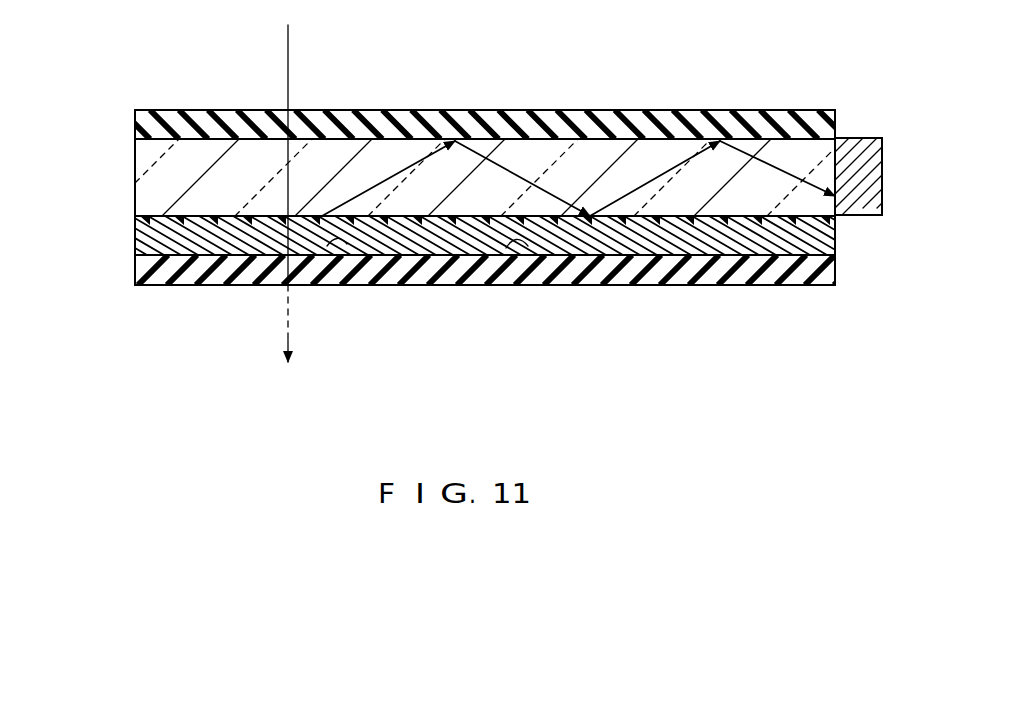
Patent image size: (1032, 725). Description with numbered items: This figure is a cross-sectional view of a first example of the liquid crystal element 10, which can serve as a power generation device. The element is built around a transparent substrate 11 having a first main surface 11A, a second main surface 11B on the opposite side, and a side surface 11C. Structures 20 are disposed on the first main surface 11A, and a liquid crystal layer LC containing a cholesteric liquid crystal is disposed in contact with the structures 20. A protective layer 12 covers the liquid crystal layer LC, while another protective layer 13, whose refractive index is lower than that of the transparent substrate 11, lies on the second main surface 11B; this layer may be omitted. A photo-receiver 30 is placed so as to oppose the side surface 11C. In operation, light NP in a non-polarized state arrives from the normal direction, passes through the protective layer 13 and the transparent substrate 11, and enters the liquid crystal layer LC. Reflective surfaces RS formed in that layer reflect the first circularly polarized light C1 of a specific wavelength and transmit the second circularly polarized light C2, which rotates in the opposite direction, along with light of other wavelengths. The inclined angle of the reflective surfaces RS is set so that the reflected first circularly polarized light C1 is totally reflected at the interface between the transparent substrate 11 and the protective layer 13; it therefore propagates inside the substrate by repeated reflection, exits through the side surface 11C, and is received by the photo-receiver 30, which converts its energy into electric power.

The liquid crystal element 10 is at (95, 208).
The transparent substrate 11 is at (140, 190).
The first main surface 11A is at (447, 219).
The second main surface 11B is at (505, 136).
The side surface 11C is at (840, 173).
The protective layer 12 is at (143, 269).
The protective layer 13 is at (140, 122).
The structures 20 is at (170, 223).
The photo-receiver 30 is at (884, 196).
The liquid crystal layer LC is at (140, 244).
The reflective surfaces RS is at (348, 256).
The light in a non-polarized state NP is at (288, 52).
The first circularly polarized light C1 is at (350, 200).
The second circularly polarized light C2 is at (290, 305).